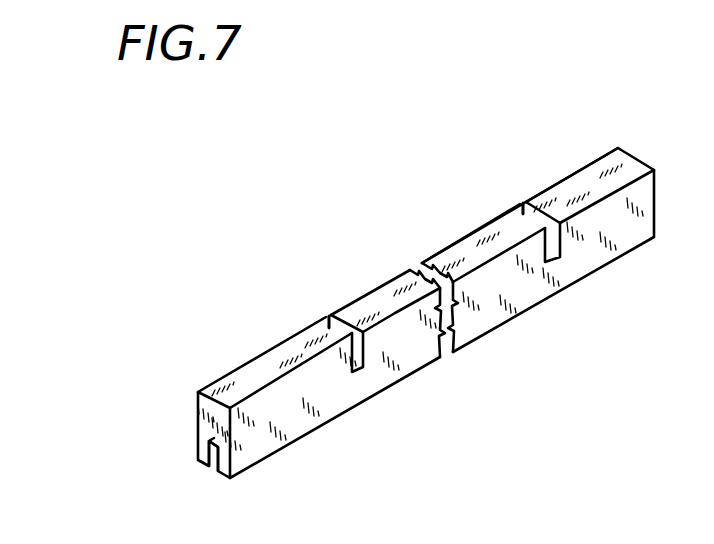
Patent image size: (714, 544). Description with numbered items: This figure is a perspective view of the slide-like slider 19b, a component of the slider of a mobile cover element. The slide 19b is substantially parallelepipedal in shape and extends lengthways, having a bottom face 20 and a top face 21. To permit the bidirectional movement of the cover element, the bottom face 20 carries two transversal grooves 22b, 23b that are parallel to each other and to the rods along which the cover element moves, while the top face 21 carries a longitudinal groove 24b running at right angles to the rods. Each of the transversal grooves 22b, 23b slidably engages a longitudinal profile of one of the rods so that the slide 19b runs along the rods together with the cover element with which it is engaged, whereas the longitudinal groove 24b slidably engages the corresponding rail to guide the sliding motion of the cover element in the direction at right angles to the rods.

The bottom face 20 is at (392, 298).
The slide-like slider 19b is at (183, 420).
The top face 21 is at (224, 478).
The transversal groove 22b is at (521, 207).
The transversal groove 23b is at (327, 317).
The longitudinal groove 24b is at (212, 472).